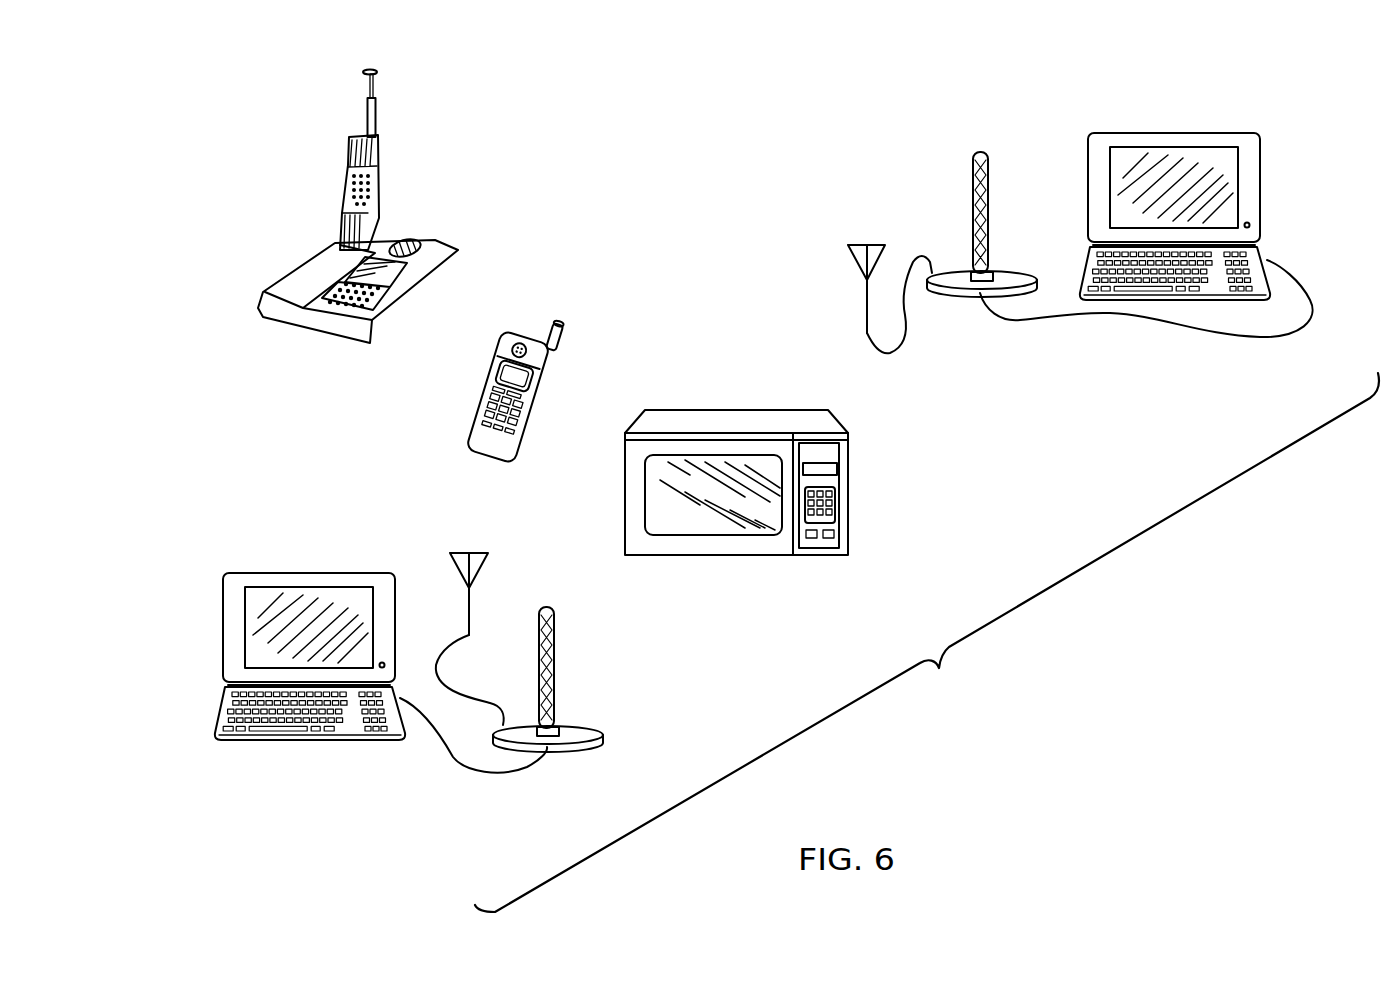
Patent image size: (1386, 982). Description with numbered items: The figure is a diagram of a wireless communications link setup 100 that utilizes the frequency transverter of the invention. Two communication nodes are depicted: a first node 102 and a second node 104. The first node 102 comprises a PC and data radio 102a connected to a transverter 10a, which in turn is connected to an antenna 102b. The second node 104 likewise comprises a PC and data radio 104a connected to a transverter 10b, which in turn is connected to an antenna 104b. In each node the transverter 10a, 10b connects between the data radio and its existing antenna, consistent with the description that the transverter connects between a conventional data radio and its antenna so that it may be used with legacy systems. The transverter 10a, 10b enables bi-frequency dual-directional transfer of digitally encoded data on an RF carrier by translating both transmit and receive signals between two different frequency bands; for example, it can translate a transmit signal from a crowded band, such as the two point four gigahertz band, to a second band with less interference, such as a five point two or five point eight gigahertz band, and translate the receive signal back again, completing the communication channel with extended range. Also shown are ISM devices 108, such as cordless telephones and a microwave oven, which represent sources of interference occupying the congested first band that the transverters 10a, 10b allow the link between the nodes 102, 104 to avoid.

The communication link boundary 100 is at (1042, 639).
The second communication node 102 is at (1318, 133).
The PC and data radio 102a is at (1165, 120).
The antenna 102b is at (874, 238).
The transverter 10a is at (965, 185).
The first communication node 104 is at (155, 655).
The PC and data radio 104a is at (277, 561).
The antenna 104b is at (467, 543).
The transverter 10b is at (577, 644).
The ISM devices 108 is at (479, 212).